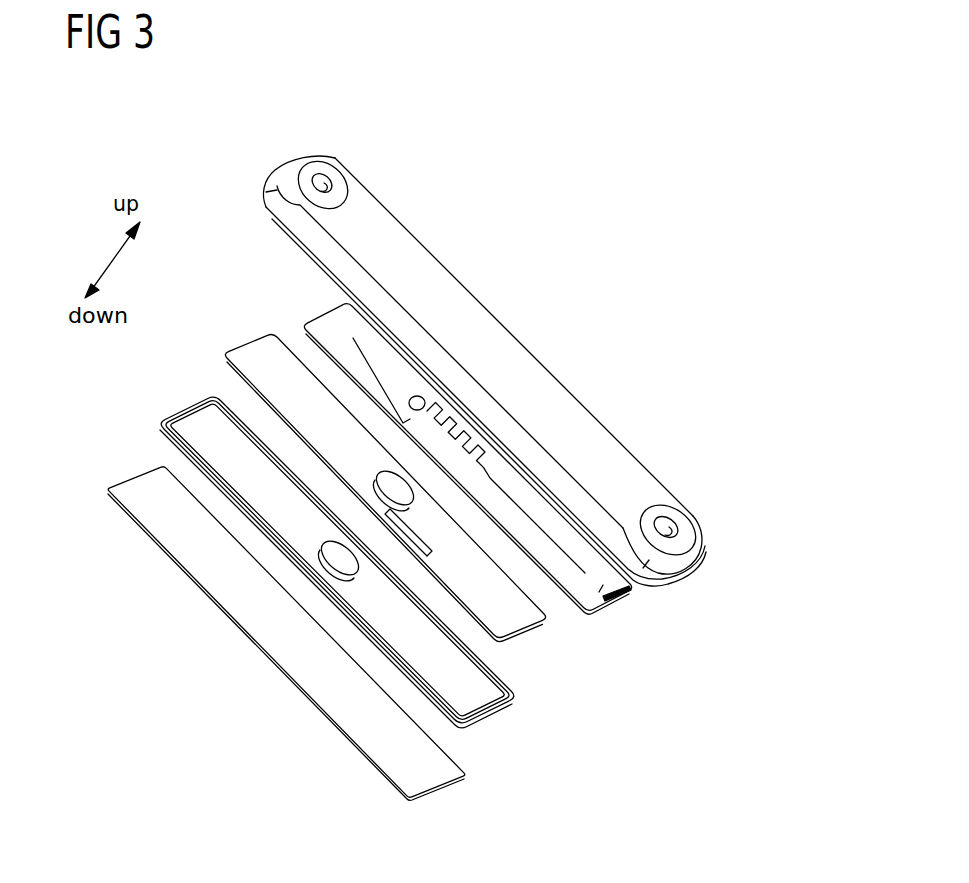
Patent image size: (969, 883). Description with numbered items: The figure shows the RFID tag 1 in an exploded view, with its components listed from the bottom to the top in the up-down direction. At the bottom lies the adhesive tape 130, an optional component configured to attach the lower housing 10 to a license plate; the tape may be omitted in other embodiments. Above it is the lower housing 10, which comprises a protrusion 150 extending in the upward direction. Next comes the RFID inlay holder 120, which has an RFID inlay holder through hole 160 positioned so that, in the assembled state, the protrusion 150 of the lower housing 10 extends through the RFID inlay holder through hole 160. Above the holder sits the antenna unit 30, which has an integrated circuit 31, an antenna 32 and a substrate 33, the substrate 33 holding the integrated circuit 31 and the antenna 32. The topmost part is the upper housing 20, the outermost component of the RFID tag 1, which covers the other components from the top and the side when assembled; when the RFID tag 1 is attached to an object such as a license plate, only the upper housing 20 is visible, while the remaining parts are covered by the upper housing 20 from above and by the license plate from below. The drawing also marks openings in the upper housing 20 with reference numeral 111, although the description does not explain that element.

The RFID tag 1 is at (478, 126).
The lower housing 10 is at (199, 416).
The upper housing 20 is at (573, 406).
The antenna unit 30 is at (633, 583).
The integrated circuit 31 is at (424, 398).
The antenna 32 is at (560, 541).
The substrate 33 is at (599, 592).
The fastening hole 111 is at (322, 183).
The RFID inlay holder 120 is at (258, 352).
The adhesive tape 130 is at (136, 490).
The protrusion 150 is at (337, 556).
The RFID inlay holder through hole 160 is at (392, 491).